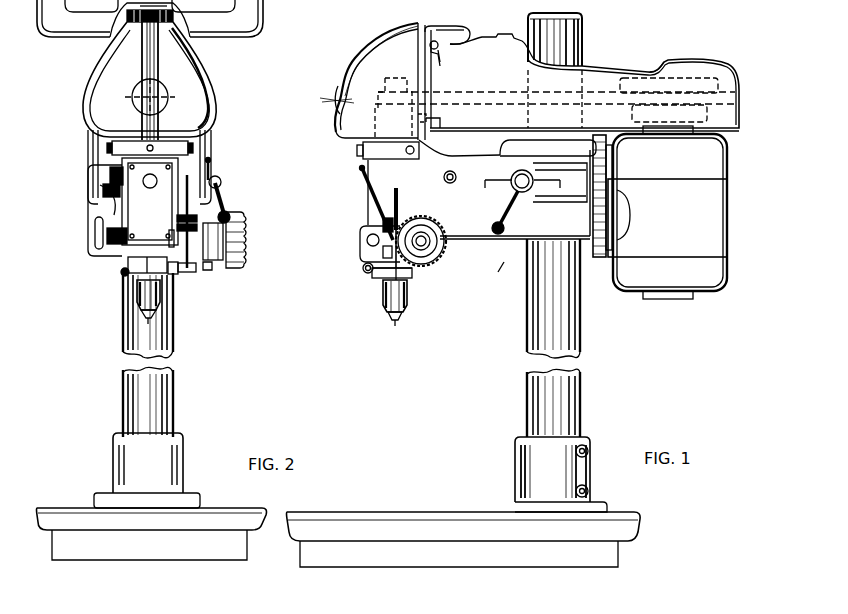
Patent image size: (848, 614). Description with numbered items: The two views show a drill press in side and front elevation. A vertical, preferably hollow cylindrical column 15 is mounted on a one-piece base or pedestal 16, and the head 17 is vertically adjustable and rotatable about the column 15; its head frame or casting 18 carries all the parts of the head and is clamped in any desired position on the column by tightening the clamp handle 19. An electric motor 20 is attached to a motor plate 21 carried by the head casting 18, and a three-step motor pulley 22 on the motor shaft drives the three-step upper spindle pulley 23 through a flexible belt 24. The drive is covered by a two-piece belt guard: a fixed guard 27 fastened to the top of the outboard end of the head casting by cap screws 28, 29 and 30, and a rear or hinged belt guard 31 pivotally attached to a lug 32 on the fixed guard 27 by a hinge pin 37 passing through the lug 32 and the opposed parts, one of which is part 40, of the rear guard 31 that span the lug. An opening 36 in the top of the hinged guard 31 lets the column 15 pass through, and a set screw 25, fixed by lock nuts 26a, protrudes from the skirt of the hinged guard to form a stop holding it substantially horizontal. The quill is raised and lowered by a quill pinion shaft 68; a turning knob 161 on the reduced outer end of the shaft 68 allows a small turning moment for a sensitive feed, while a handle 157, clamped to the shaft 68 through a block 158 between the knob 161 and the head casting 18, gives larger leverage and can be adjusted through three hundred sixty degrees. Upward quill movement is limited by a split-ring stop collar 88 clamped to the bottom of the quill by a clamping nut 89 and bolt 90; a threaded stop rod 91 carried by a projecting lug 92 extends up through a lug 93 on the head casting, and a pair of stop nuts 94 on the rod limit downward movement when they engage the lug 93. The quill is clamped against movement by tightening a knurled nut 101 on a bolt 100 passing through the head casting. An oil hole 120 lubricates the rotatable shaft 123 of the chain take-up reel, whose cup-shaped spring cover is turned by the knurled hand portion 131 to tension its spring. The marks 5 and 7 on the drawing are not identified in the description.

In FIG. 2, the spindle axis / section indicator 5 is at (152, 6).
In FIG. 1, the section line 7 is at (534, 182).
In FIG. 2, the column 15 is at (165, 26).
In FIG. 1, the column 15 is at (584, 30).
In FIG. 2, the base 16 is at (220, 510).
In FIG. 1, the base 16 is at (428, 512).
In FIG. 2, the head 17 is at (88, 232).
In FIG. 1, the head 17 is at (496, 277).
In FIG. 1, the head casting 18 is at (486, 239).
In FIG. 2, the clamp handle 19 is at (222, 194).
In FIG. 1, the clamp handle 19 is at (512, 200).
In FIG. 1, the electric motor 20 is at (626, 293).
In FIG. 2, the motor plate 21 is at (205, 145).
In FIG. 1, the motor plate 21 is at (600, 258).
In FIG. 1, the motor pulley 22 is at (684, 80).
In FIG. 1, the upper spindle pulley 23 is at (386, 82).
In FIG. 1, the belt 24 is at (596, 92).
In FIG. 1, the set screw 25 is at (430, 125).
In FIG. 1, the lock nuts 26a is at (428, 118).
In FIG. 2, the fixed guard 27 is at (92, 92).
In FIG. 1, the fixed guard 27 is at (358, 70).
In FIG. 2, the cap screw 28 is at (158, 145).
In FIG. 1, the cap screw 28 is at (357, 150).
In FIG. 2, the cap screw 29 is at (190, 142).
In FIG. 1, the cap screw 29 is at (414, 153).
In FIG. 2, the cap screw 30 is at (107, 148).
In FIG. 1, the hinged belt guard 31 is at (724, 74).
In FIG. 1, the lug 32 is at (448, 28).
In FIG. 1, the opening 36 is at (655, 66).
In FIG. 1, the hinge pin 37 is at (438, 47).
In FIG. 1, the opposed part of rear guard 40 is at (441, 62).
In FIG. 2, the quill pinion shaft 68 is at (212, 266).
In FIG. 2, the stop collar 88 is at (128, 265).
In FIG. 1, the stop collar 88 is at (380, 278).
In FIG. 2, the clamping nut 89 is at (174, 274).
In FIG. 1, the clamping nut 89 is at (374, 272).
In FIG. 2, the bolt 90 is at (123, 272).
In FIG. 1, the bolt 90 is at (363, 266).
In FIG. 2, the stop rod 91 is at (190, 265).
In FIG. 1, the stop rod 91 is at (399, 195).
In FIG. 2, the projecting lug 92 is at (196, 270).
In FIG. 1, the projecting lug 92 is at (404, 278).
In FIG. 2, the lug 93 is at (169, 245).
In FIG. 1, the lug 93 is at (383, 252).
In FIG. 2, the stop nuts 94 is at (177, 220).
In FIG. 1, the stop nuts 94 is at (383, 230).
In FIG. 1, the bolt 100 is at (366, 240).
In FIG. 2, the knurled nut 101 is at (122, 246).
In FIG. 1, the oil hole 120 is at (452, 168).
In FIG. 1, the shaft 123 is at (455, 174).
In FIG. 2, the knurled hand portion 131 is at (110, 172).
In FIG. 2, the handle 157 is at (210, 168).
In FIG. 1, the handle 157 is at (358, 172).
In FIG. 2, the block 158 is at (223, 260).
In FIG. 2, the turning knob 161 is at (243, 214).
In FIG. 1, the turning knob 161 is at (440, 222).